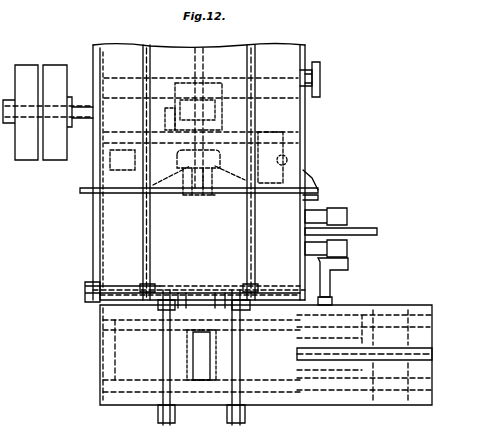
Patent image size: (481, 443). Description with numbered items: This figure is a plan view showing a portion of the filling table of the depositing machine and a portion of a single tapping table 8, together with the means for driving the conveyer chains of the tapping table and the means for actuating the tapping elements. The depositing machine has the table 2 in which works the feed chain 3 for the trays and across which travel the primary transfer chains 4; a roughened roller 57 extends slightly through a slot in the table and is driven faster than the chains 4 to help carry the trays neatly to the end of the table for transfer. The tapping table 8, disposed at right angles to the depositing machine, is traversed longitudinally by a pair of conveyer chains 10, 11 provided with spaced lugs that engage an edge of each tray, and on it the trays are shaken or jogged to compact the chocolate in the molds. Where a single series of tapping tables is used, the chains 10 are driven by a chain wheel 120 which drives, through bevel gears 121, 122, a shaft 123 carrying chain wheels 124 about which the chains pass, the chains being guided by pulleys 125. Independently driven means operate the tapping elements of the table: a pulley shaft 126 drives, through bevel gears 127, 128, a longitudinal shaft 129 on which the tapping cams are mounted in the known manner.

The table 2 is at (266, 355).
The feed chain 3 is at (387, 349).
The primary transfer chains 4 is at (163, 360).
The tapping table 8 is at (199, 172).
The conveyer chains 10 is at (150, 62).
The conveyer chains 11 is at (248, 60).
The roller 57 is at (205, 358).
The chain wheel 120 is at (360, 235).
The bevel gear 121 is at (344, 268).
The bevel gear 122 is at (332, 300).
The shaft 123 is at (195, 290).
The chain wheels 124 is at (150, 286).
The pulleys 125 is at (160, 308).
The pulley shaft 126 is at (80, 118).
The bevel gear 127 is at (180, 128).
The bevel gear 128 is at (210, 84).
The longitudinal shaft 129 is at (200, 106).